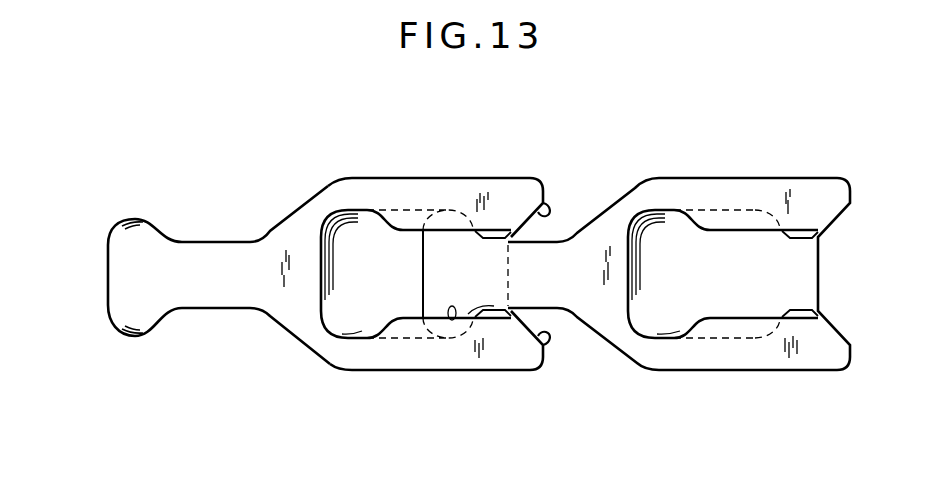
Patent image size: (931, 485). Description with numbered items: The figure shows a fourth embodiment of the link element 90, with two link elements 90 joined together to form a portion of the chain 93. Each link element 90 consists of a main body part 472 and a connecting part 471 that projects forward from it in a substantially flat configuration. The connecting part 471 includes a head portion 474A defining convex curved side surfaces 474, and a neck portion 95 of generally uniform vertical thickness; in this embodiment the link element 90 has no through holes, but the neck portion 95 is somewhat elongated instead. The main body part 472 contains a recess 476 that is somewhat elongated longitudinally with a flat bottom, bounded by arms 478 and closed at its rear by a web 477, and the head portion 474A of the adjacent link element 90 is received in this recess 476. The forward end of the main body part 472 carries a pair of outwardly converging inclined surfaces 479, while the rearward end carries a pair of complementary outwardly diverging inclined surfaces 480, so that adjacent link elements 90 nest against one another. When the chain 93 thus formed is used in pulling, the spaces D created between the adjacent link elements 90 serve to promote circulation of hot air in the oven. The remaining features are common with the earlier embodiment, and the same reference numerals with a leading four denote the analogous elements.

The link element 90 is at (398, 166).
The chain 93 is at (531, 156).
The neck portion 95 is at (222, 246).
The connecting part 471 is at (157, 203).
The main body part 472 is at (491, 166).
The convex curved side surfaces 474 is at (130, 220).
The head portion 474A is at (96, 271).
The recess 476 is at (349, 323).
The web 477 is at (458, 322).
The arm 478 is at (398, 220).
The outwardly converging inclined surfaces 479 is at (307, 202).
The outwardly diverging inclined surfaces 480 is at (550, 213).
The spaces D is at (556, 230).